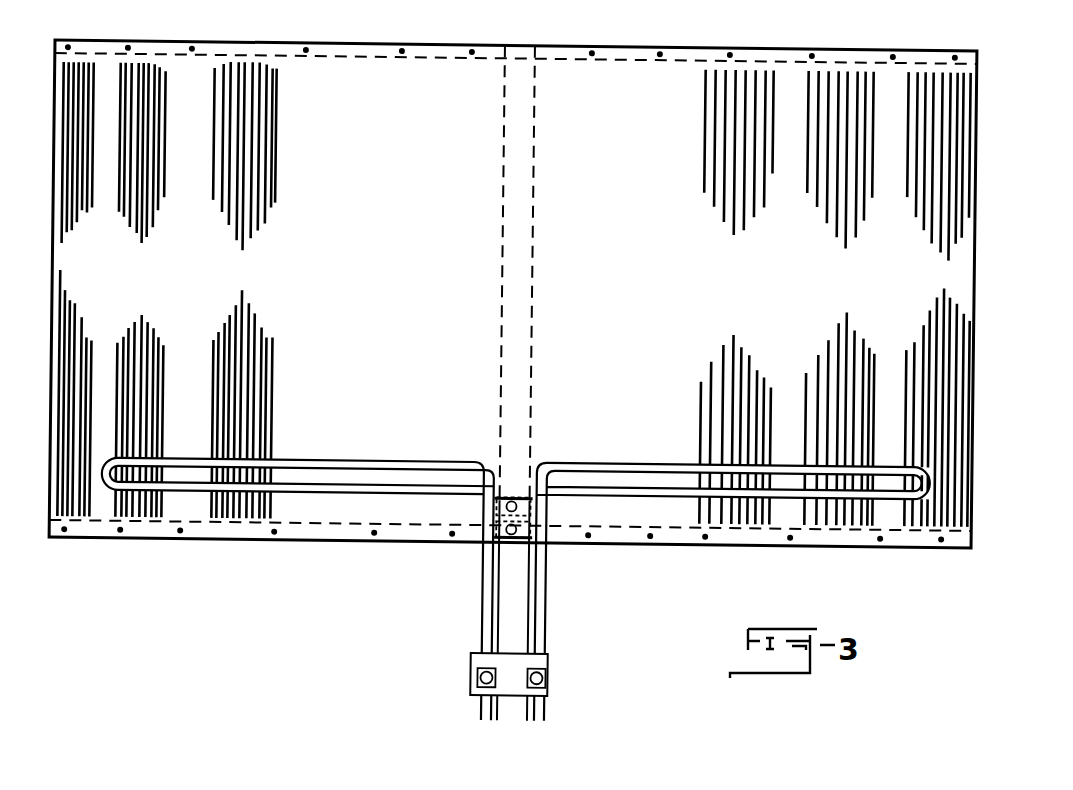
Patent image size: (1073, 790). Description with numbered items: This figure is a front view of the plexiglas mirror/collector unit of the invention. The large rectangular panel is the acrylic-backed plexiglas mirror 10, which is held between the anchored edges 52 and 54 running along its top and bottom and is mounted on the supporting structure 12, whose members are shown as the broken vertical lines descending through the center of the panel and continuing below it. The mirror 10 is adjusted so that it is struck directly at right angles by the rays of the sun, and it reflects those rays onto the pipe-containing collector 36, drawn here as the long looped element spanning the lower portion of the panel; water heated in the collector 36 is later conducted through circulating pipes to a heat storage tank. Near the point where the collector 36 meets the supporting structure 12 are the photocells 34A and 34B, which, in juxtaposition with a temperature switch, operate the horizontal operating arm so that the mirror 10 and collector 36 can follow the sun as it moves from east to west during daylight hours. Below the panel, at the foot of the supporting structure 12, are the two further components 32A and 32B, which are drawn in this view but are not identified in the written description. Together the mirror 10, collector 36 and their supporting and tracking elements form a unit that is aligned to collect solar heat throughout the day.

The acrylic-backed plexiglas mirror 10 is at (908, 284).
The supporting structure 12 is at (543, 54).
The terminal 32A is at (478, 676).
The terminal 32B is at (545, 677).
The photocell 34A is at (521, 509).
The photocell 34B is at (535, 540).
The pipe-containing collector 36 is at (934, 482).
The anchored edge 52 is at (976, 60).
The anchored edge 54 is at (976, 541).